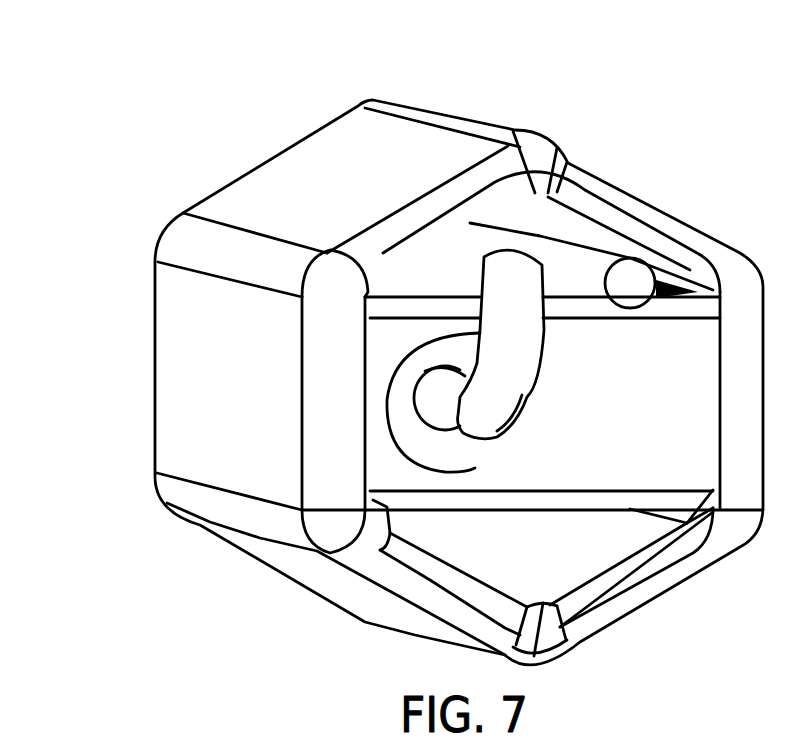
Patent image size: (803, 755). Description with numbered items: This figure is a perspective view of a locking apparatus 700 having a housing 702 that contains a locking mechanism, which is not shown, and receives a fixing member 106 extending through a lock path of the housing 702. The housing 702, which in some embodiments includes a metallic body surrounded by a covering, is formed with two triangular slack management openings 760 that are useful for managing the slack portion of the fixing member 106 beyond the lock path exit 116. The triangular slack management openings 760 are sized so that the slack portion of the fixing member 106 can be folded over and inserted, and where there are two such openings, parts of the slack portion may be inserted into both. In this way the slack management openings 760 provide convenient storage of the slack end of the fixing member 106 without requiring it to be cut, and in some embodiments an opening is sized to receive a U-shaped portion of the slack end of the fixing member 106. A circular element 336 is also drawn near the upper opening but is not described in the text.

The locking apparatus 700 is at (184, 76).
The housing 702 is at (207, 367).
The triangular slack management openings 760 is at (553, 220).
The tube 336 is at (638, 290).
The fixing member 106 is at (510, 372).
The lock path exit 116 is at (423, 427).